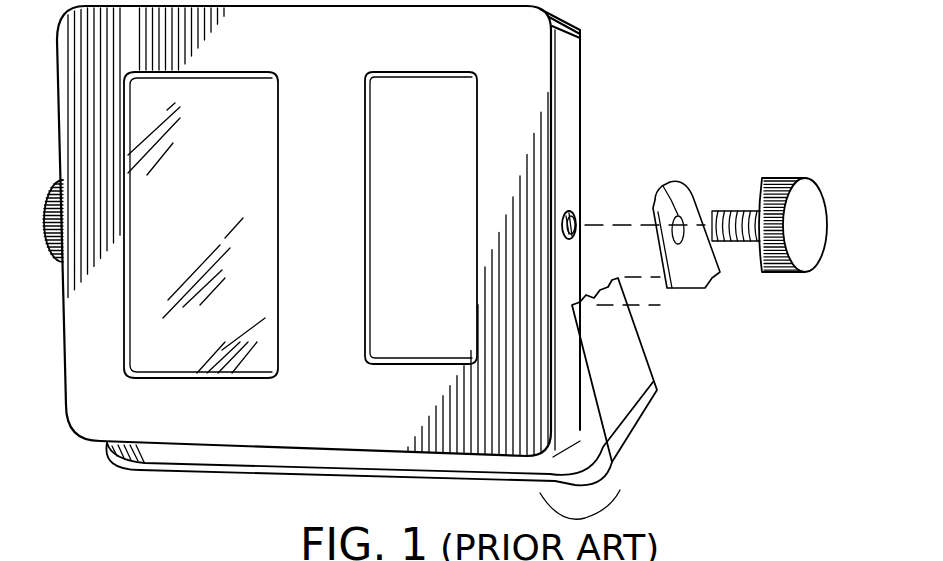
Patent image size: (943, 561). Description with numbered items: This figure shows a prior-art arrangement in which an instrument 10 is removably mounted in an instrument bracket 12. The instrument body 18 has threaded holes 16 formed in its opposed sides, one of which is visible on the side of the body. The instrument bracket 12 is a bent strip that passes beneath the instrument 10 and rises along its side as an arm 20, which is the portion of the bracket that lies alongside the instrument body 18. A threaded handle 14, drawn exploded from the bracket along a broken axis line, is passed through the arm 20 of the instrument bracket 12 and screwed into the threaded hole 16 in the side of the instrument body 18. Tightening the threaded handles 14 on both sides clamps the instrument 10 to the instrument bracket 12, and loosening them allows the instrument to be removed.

The instrument 10 is at (605, 52).
The instrument bracket 12 is at (617, 510).
The threaded handle 14 is at (807, 273).
The threaded hole 16 is at (578, 210).
The instrument body 18 is at (580, 128).
The arm 20 is at (653, 362).